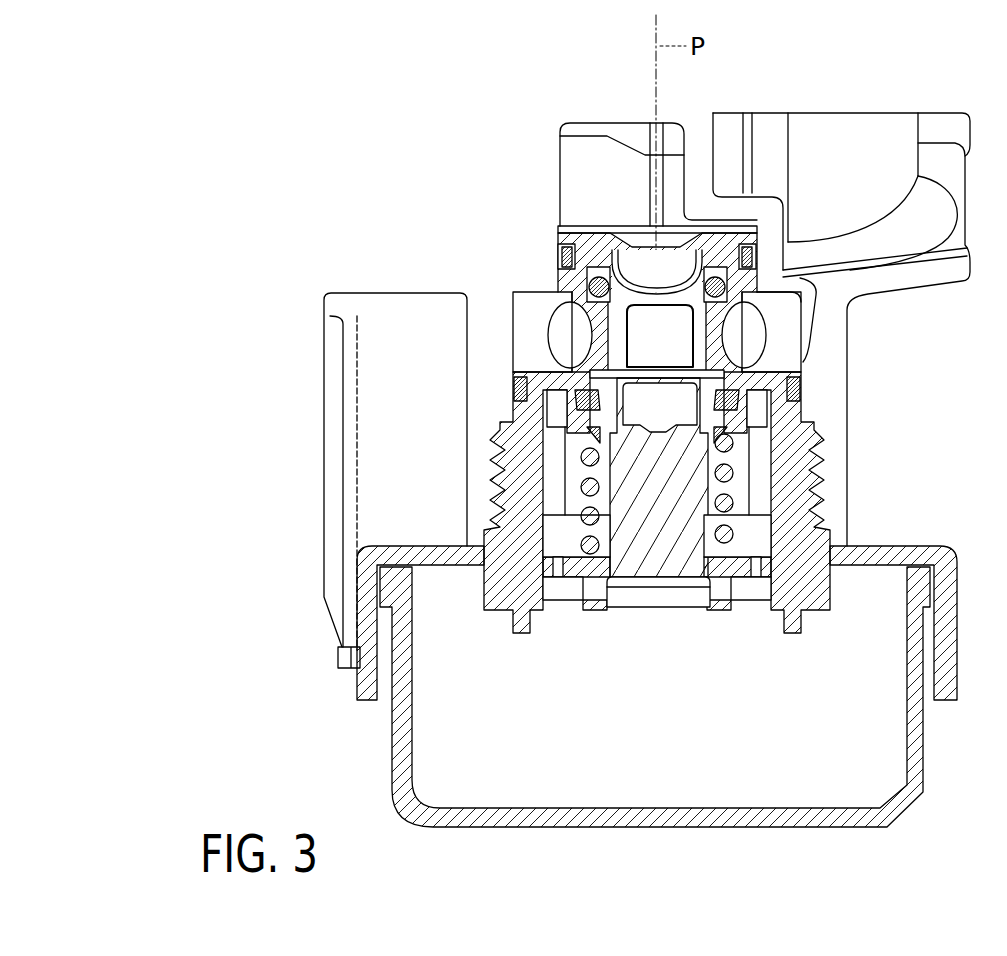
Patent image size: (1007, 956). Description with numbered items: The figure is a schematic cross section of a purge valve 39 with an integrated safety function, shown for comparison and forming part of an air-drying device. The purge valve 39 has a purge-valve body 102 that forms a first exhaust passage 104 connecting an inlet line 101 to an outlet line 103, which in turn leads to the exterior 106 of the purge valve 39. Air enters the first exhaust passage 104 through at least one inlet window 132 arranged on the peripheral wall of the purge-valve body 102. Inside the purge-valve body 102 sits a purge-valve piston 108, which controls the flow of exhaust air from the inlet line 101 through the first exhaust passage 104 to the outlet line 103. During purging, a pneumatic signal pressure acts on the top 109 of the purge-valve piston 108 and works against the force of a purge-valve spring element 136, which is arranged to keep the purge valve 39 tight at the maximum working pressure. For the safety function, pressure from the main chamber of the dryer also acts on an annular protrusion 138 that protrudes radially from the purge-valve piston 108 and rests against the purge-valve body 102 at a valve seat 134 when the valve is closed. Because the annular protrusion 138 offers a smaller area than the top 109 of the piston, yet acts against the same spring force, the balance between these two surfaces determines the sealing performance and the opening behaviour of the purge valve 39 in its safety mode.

The purge valve 39 is at (453, 171).
The inlet line 101 is at (565, 328).
The purge-valve body 102 is at (570, 512).
The outlet line 103 is at (572, 535).
The first exhaust passage 104 is at (563, 450).
The exterior 106 is at (543, 721).
The purge-valve piston 108 is at (570, 262).
The top of the purge-valve piston 109 is at (656, 278).
The inlet window 132 is at (570, 360).
The valve seat 134 is at (575, 402).
The purge-valve spring element 136 is at (580, 490).
The annular protrusion 138 is at (745, 418).